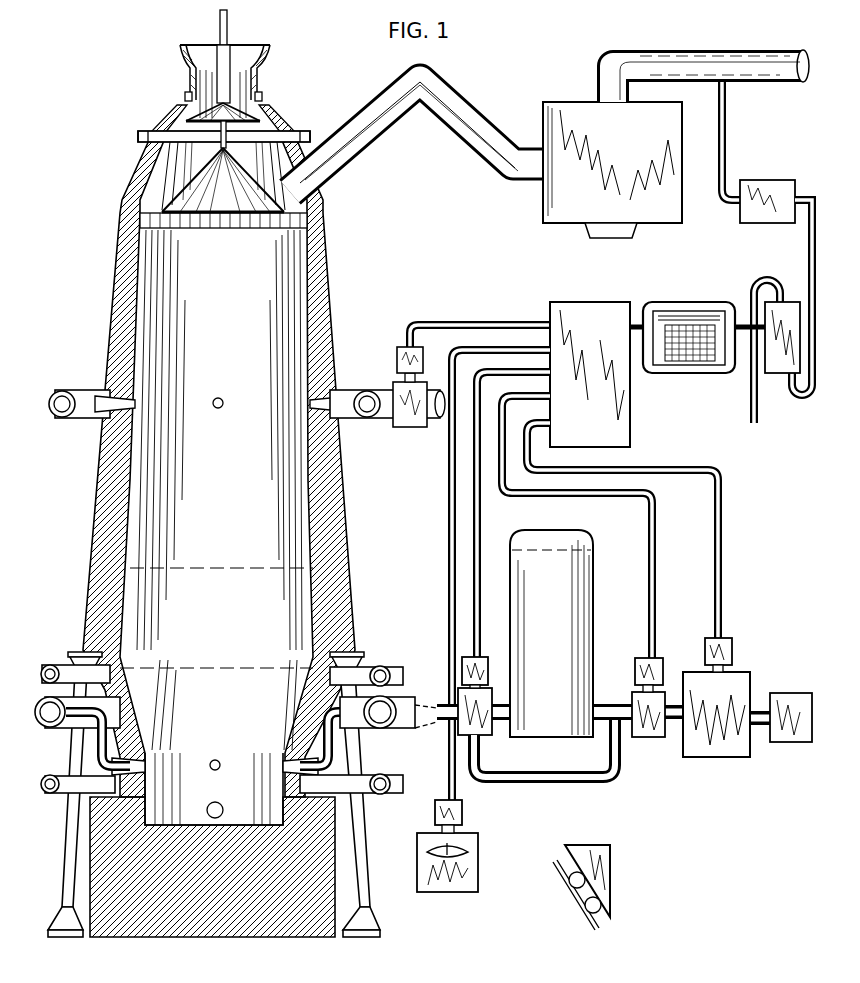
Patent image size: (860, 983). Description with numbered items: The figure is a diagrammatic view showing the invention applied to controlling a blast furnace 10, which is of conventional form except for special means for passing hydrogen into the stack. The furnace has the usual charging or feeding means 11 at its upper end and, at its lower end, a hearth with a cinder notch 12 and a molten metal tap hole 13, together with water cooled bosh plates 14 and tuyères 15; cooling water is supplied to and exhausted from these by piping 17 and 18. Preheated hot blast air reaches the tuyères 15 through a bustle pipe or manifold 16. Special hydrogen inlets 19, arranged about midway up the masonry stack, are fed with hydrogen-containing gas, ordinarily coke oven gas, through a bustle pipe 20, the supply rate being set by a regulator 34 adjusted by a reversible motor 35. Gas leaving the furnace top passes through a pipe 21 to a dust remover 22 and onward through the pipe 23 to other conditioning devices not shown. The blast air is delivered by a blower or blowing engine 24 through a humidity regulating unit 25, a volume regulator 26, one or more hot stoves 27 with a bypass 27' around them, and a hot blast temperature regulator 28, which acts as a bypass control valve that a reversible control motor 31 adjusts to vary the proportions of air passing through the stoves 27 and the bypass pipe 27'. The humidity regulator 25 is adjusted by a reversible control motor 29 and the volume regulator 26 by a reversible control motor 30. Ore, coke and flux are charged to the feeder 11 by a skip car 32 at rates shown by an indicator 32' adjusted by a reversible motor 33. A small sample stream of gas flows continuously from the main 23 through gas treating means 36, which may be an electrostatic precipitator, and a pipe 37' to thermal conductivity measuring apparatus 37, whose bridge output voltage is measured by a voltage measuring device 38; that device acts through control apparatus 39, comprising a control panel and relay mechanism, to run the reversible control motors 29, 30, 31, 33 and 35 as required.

The blast furnace 10 is at (118, 294).
The charging or feeding means 11 is at (174, 109).
The cinder notch 12 is at (146, 790).
The molten metal tap hole 13 is at (217, 804).
The water cooled bosh plates 14 is at (130, 702).
The tuyères 15 is at (146, 766).
The bustle pipe or manifold 16 is at (408, 697).
The piping 17 is at (390, 774).
The piping 18 is at (390, 666).
The hydrogen inlets 19 is at (136, 402).
The bustle pipe 20 is at (386, 421).
The pipe 21 is at (359, 117).
The dust remover 22 is at (575, 106).
The pipe 23 is at (718, 50).
The blower or blowing engine 24 is at (800, 746).
The humidity regulating unit 25 is at (741, 672).
The volume regulator 26 is at (660, 737).
The hot stoves 27 is at (551, 622).
The bypass 27' is at (544, 761).
The hot blast temperature regulator 28 is at (488, 736).
The reversible control motor 29 is at (725, 636).
The reversible control motor 30 is at (645, 657).
The reversible control motor 31 is at (480, 656).
The skip car 32 is at (601, 887).
The indicator 32' is at (469, 858).
The reversible motor 33 is at (462, 805).
The regulator 34 is at (414, 427).
The reversible motor 35 is at (398, 351).
The gas treating means 36 is at (754, 180).
The measuring apparatus 37 is at (781, 345).
The pipe 37' is at (788, 297).
The voltage measuring device 38 is at (675, 302).
The control apparatus 39 is at (582, 302).